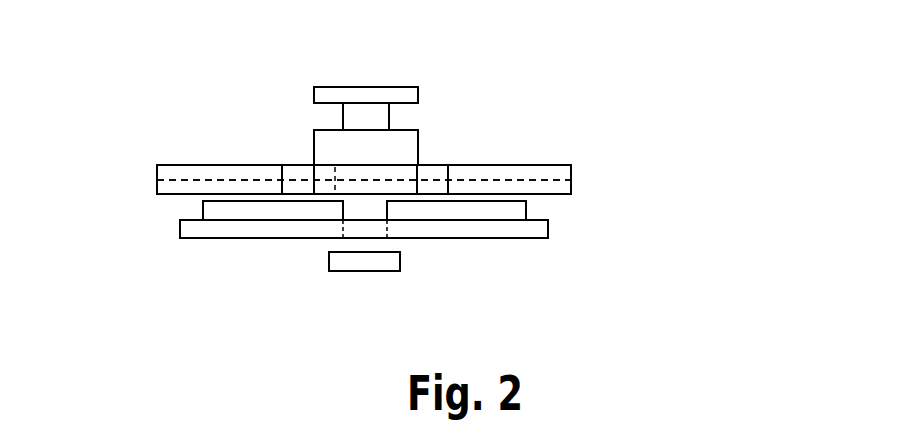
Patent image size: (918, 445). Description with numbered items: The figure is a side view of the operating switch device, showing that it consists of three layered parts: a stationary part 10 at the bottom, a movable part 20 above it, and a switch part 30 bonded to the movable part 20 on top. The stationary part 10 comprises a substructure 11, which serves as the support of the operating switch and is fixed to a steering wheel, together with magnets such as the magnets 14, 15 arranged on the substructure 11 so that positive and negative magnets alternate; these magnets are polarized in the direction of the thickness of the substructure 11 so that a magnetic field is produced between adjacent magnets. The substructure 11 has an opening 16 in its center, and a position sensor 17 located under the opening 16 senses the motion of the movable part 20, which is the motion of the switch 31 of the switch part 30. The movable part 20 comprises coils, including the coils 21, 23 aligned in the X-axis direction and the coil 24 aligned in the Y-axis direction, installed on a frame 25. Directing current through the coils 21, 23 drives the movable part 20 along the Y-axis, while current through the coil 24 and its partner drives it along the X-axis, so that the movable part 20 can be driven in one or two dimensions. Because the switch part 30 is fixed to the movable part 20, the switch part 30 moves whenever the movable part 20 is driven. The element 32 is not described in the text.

The stationary part 10 is at (421, 258).
The substructure 11 is at (488, 233).
The magnet 14 is at (212, 210).
The magnet 15 is at (517, 210).
The opening 16 is at (352, 229).
The position sensor 17 is at (392, 262).
The movable part 20 is at (406, 143).
The coil 21 is at (562, 188).
The coil 23 is at (165, 186).
The coil 24 is at (335, 166).
The frame 25 is at (497, 165).
The switch part 30 is at (542, 96).
The switch 31 is at (418, 92).
The upper block 32 is at (407, 147).